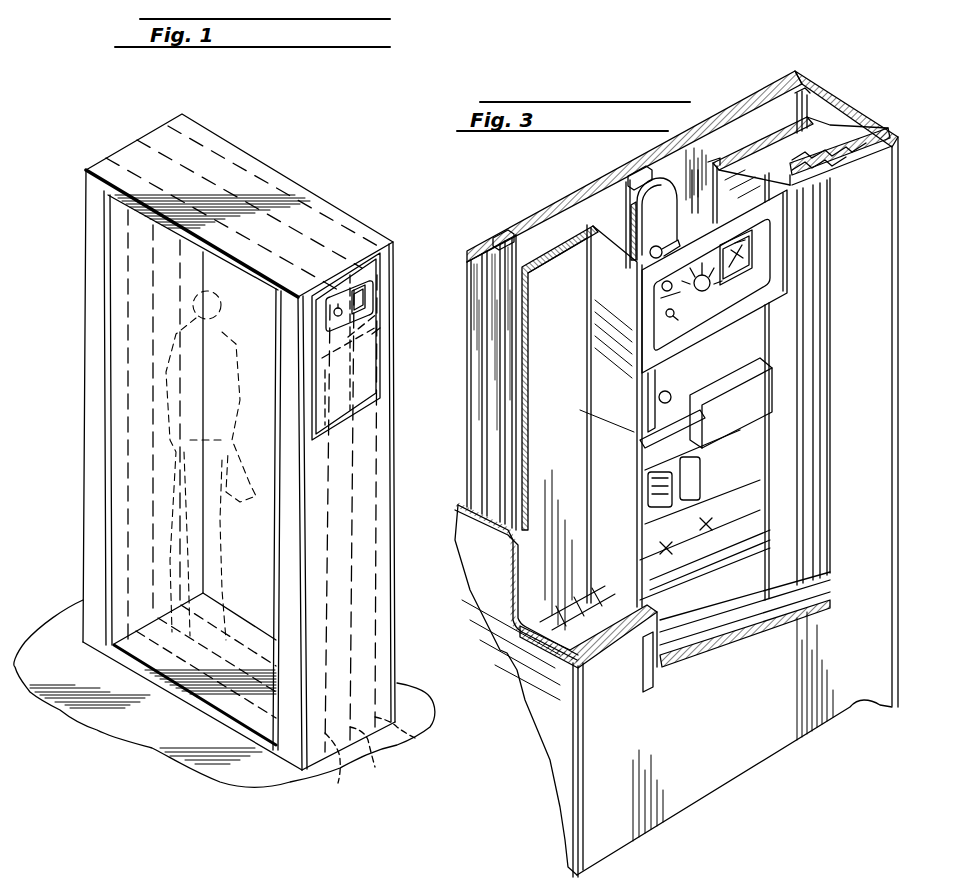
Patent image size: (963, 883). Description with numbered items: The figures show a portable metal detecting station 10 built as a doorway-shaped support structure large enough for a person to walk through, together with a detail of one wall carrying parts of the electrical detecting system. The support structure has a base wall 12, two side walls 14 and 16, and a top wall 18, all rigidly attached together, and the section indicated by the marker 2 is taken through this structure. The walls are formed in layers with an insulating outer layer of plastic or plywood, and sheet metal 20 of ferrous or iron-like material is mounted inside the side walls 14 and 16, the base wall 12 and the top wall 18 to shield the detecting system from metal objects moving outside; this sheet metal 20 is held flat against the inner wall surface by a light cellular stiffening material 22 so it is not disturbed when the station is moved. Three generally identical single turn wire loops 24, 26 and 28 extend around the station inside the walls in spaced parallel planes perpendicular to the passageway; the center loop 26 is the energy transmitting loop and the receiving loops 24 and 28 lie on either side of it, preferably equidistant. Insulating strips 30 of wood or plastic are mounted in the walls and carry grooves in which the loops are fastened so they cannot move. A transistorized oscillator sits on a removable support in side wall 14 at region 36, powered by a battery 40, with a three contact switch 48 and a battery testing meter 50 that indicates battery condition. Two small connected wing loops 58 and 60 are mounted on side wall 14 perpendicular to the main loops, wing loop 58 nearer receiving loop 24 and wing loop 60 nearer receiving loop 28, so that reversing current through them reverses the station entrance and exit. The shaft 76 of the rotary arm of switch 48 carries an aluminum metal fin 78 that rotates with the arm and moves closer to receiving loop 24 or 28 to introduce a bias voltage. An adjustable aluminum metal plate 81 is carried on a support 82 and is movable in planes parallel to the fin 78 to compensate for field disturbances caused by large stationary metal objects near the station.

In FIG. 1, the section line 2- 2 is at (88, 135).
In FIG. 1, the detecting station 10 is at (307, 137).
In FIG. 1, the base wall 12 is at (228, 698).
In FIG. 1, the side wall 14 is at (372, 610).
In FIG. 3, the side wall 14 is at (687, 790).
In FIG. 1, the side wall 16 is at (80, 482).
In FIG. 1, the top wall 18 is at (336, 219).
In FIG. 3, the sheet metal 20 is at (833, 147).
In FIG. 3, the cellular stiffening material 22 is at (820, 130).
In FIG. 1, the energy receiving loop 24 is at (338, 783).
In FIG. 3, the energy receiving loop 24 is at (523, 248).
In FIG. 1, the energy transmitting loop 26 is at (370, 757).
In FIG. 3, the energy transmitting loop 26 is at (597, 193).
In FIG. 1, the energy receiving loop 28 is at (411, 734).
In FIG. 3, the energy receiving loop 28 is at (785, 103).
In FIG. 3, the strips 30 is at (497, 243).
In FIG. 1, the region 36 is at (368, 366).
In FIG. 3, the region 36 is at (760, 352).
In FIG. 3, the battery 40 is at (660, 501).
In FIG. 3, the three contact switch 48 is at (690, 292).
In FIG. 3, the battery testing meter 50 is at (755, 263).
In FIG. 1, the wing loop 58 is at (318, 357).
In FIG. 1, the wing loop 60 is at (380, 328).
In FIG. 3, the shaft 76 is at (663, 247).
In FIG. 3, the metal fin 78 is at (643, 215).
In FIG. 3, the adjustable metal plate 81 is at (712, 524).
In FIG. 3, the support 82 is at (525, 556).